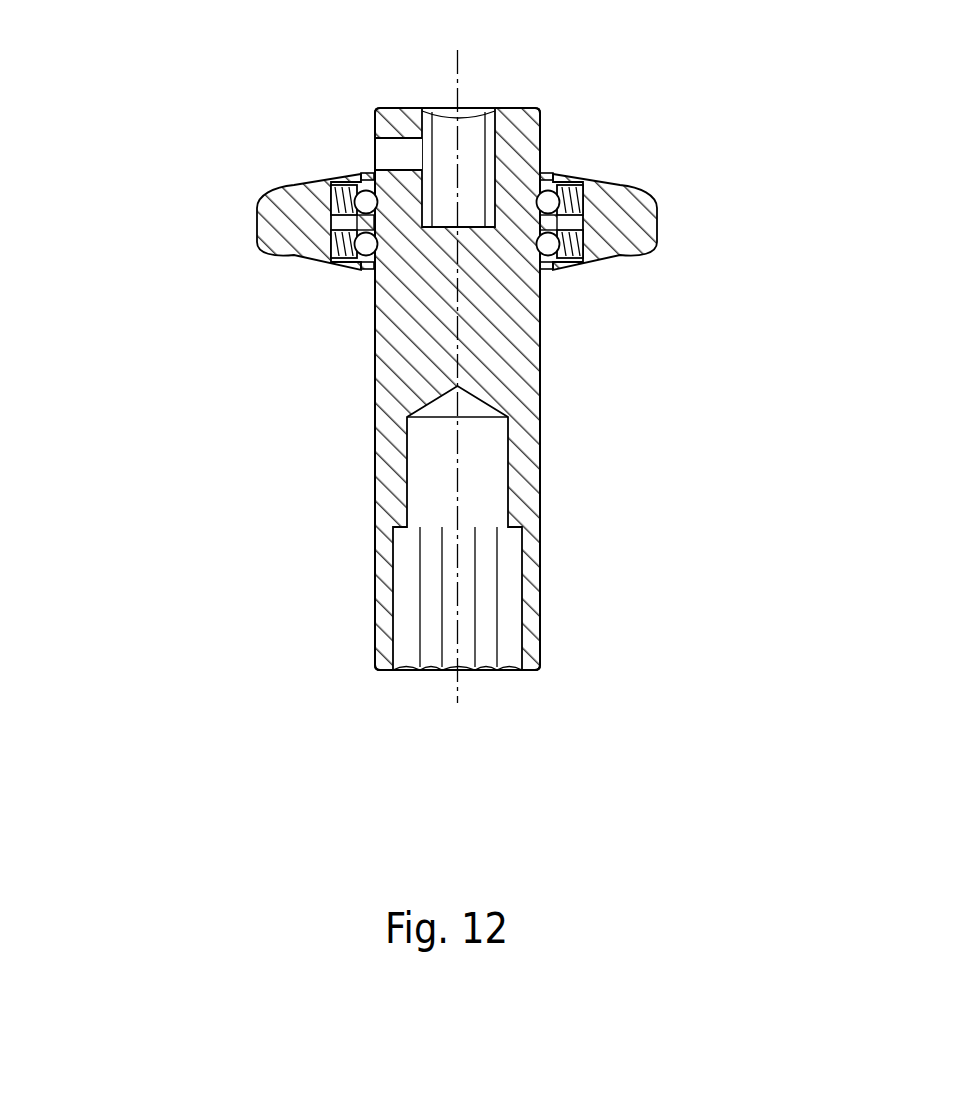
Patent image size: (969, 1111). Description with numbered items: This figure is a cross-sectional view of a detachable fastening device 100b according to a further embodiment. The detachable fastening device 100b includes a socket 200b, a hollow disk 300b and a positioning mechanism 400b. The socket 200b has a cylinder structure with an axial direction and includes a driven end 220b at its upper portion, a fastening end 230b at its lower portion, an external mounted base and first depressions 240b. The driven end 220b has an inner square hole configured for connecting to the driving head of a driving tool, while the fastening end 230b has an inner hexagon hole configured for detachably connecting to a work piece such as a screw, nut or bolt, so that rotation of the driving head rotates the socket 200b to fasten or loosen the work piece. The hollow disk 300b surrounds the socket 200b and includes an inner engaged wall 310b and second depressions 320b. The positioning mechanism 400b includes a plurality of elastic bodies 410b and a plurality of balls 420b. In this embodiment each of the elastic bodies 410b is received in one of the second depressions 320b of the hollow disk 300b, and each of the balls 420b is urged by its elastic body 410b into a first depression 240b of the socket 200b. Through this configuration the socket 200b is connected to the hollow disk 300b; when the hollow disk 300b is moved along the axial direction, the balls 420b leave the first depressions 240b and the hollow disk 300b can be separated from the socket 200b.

The detachable fastening device 100b is at (118, 218).
The socket 200b is at (493, 384).
The driven end 220b is at (525, 108).
The fastening end 230b is at (525, 670).
The first depressions 240b is at (403, 173).
The hollow disk 300b is at (514, 264).
The inner engaged wall 310b is at (573, 219).
The second depressions 320b is at (583, 259).
The positioning mechanism 400b is at (538, 158).
The elastic bodies 410b is at (557, 173).
The balls 420b is at (552, 175).